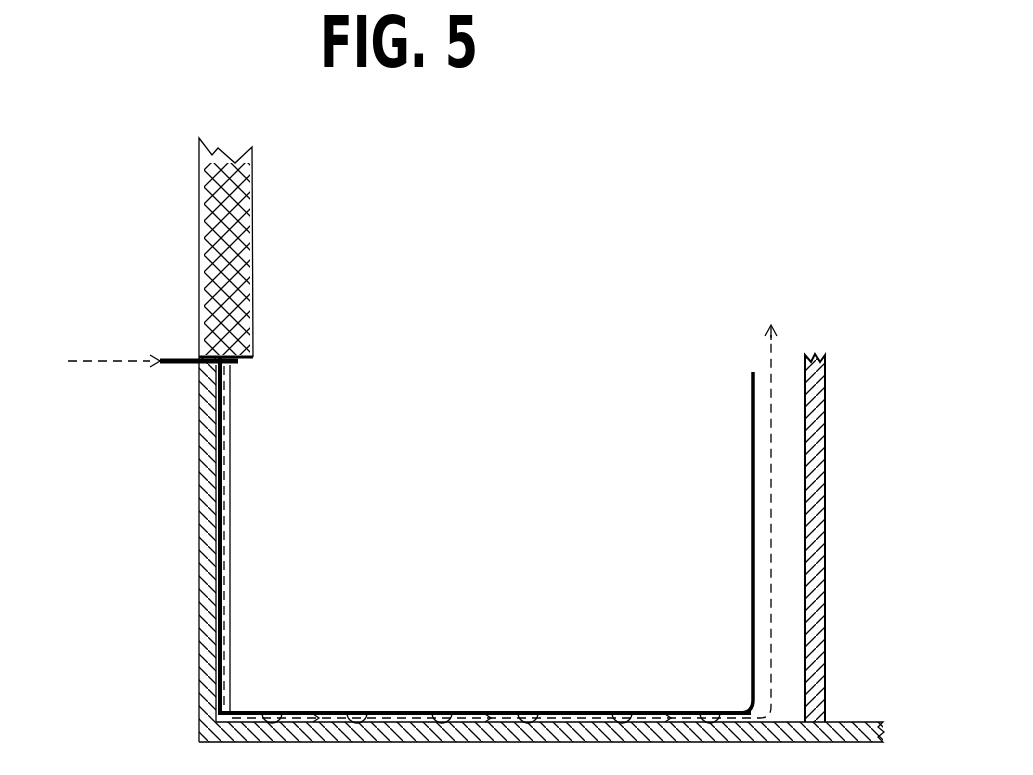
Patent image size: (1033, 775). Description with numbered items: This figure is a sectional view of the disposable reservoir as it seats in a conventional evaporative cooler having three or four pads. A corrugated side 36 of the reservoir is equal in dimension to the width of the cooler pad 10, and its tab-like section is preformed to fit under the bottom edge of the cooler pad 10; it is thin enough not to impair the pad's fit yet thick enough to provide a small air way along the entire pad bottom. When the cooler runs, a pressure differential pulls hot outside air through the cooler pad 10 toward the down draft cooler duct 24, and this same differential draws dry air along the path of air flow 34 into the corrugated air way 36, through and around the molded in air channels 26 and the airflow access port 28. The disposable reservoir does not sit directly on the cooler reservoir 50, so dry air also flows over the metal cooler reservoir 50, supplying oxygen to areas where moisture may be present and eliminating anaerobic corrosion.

The cooler pad 10 is at (222, 192).
The down draft cooler duct 24 is at (818, 478).
The molded in air channels 26 is at (525, 712).
The airflow access port 28 is at (582, 716).
The path of air flow 34 is at (401, 331).
The corrugated sides 36 is at (230, 419).
The cross-section of cooler reservoir 50 is at (199, 502).